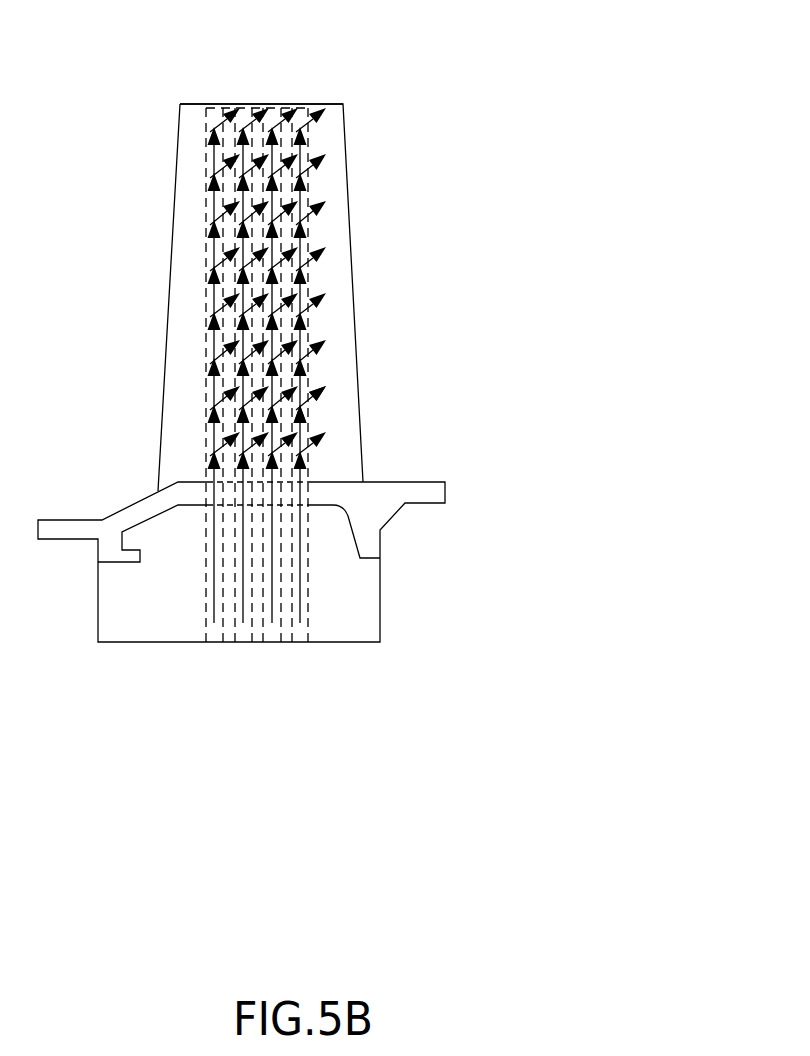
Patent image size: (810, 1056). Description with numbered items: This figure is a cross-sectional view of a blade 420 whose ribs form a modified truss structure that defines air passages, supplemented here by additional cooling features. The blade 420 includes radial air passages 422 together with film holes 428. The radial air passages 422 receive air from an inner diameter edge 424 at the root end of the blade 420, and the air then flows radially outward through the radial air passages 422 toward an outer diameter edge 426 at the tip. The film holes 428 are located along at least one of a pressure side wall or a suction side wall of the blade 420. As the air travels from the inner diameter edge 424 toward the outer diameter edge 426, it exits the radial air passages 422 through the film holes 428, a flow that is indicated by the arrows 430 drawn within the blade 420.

The blade 420 is at (392, 198).
The radial air passages 422 is at (310, 413).
The inner diameter edge 424 is at (145, 643).
The outer diameter edge 426 is at (205, 105).
The film holes 428 is at (316, 258).
The arrows 430 is at (316, 298).